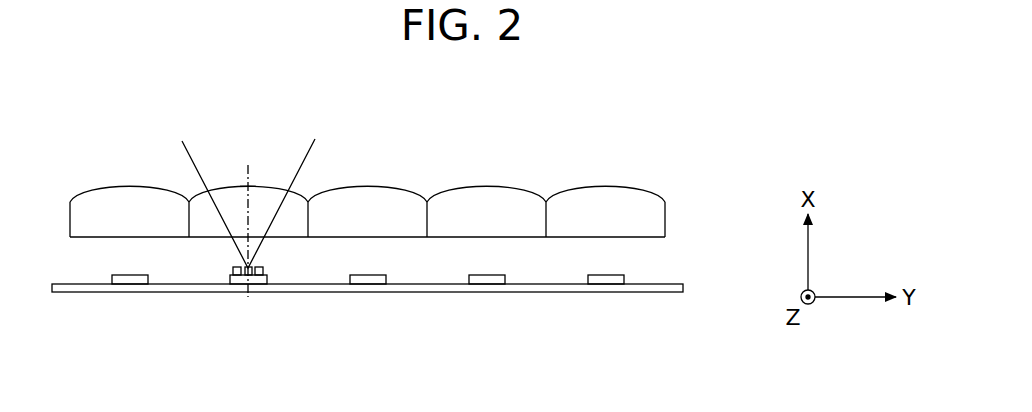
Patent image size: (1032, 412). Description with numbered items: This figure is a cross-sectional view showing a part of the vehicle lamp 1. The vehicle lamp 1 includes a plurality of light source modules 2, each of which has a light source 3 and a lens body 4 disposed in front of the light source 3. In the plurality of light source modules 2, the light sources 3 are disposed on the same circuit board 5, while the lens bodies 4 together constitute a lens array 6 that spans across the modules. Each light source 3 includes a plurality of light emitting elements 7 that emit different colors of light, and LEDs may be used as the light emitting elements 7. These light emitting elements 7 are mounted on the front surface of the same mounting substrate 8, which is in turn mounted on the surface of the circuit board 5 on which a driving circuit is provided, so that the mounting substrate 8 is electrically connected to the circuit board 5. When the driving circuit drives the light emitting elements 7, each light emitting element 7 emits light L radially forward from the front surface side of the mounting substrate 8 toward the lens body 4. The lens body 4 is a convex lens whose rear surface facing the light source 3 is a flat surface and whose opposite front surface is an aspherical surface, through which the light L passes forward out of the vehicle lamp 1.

The vehicle lamp 1 is at (66, 126).
The light source module 2 is at (178, 172).
The light source 3 is at (230, 325).
The lens body 4 is at (270, 185).
The circuit board 5 is at (684, 288).
The lens array 6 is at (672, 211).
The light emitting element 7 is at (248, 268).
The mounting substrate 8 is at (268, 280).
The light L is at (305, 159).